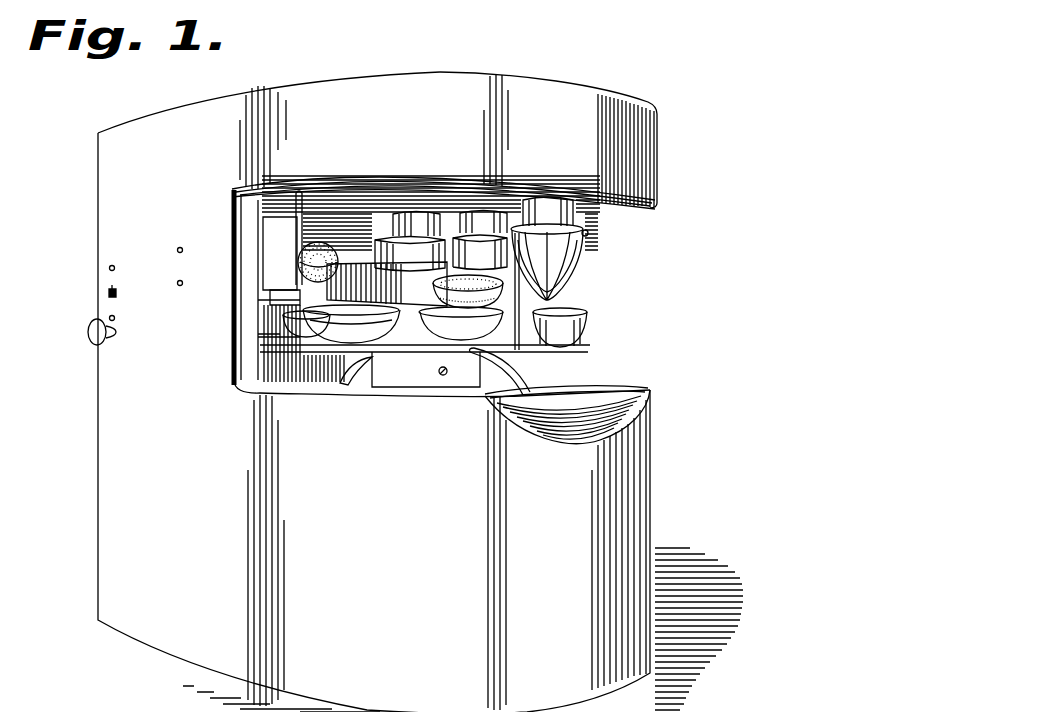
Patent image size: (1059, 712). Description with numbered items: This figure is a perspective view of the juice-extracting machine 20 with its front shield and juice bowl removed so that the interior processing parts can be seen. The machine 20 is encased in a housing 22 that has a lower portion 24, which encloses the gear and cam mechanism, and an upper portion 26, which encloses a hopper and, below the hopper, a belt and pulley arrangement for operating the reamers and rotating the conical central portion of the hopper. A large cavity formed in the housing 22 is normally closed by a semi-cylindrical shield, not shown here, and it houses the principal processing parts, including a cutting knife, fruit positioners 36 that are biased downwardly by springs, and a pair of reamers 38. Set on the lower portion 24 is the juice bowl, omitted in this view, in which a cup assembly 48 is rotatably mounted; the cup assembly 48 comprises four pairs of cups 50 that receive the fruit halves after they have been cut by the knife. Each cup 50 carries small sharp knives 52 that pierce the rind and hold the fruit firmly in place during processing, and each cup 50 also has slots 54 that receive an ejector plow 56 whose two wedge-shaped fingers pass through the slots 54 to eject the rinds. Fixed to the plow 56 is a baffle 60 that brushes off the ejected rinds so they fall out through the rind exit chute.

The machine 20 is at (405, 514).
The housing 22 is at (132, 489).
The lower portion 24 is at (607, 498).
The upper portion 26 is at (612, 97).
The fruit positioners 36 is at (473, 216).
The reamers 38 is at (540, 223).
The cup assembly 48 is at (521, 334).
The cups 50 is at (583, 322).
The small sharp knives 52 is at (598, 297).
The slots 54 is at (270, 333).
The ejector plow 56 is at (260, 298).
The baffle 60 is at (418, 290).